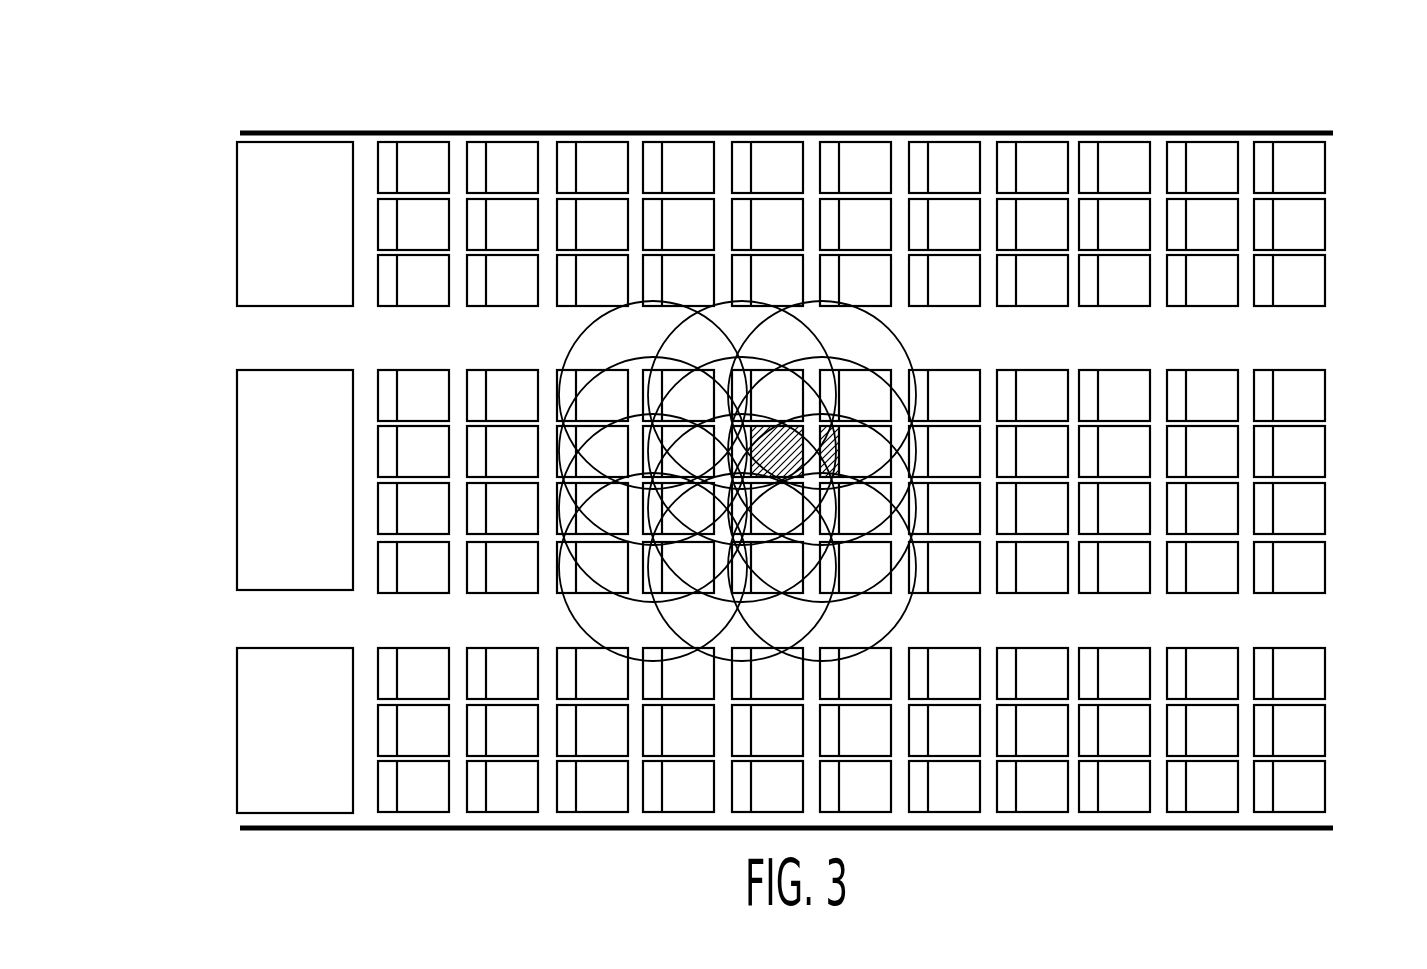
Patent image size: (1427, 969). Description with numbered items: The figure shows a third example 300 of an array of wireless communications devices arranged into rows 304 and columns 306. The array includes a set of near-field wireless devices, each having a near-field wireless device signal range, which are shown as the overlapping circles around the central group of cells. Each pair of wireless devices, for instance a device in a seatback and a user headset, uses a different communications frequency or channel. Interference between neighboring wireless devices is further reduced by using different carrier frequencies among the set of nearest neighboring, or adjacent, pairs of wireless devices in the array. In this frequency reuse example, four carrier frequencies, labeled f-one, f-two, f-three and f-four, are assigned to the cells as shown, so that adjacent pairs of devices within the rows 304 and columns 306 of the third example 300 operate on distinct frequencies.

The third example of an array of wireless communications devices 300 is at (176, 102).
The rows 304 is at (240, 119).
The columns 306 is at (1347, 137).